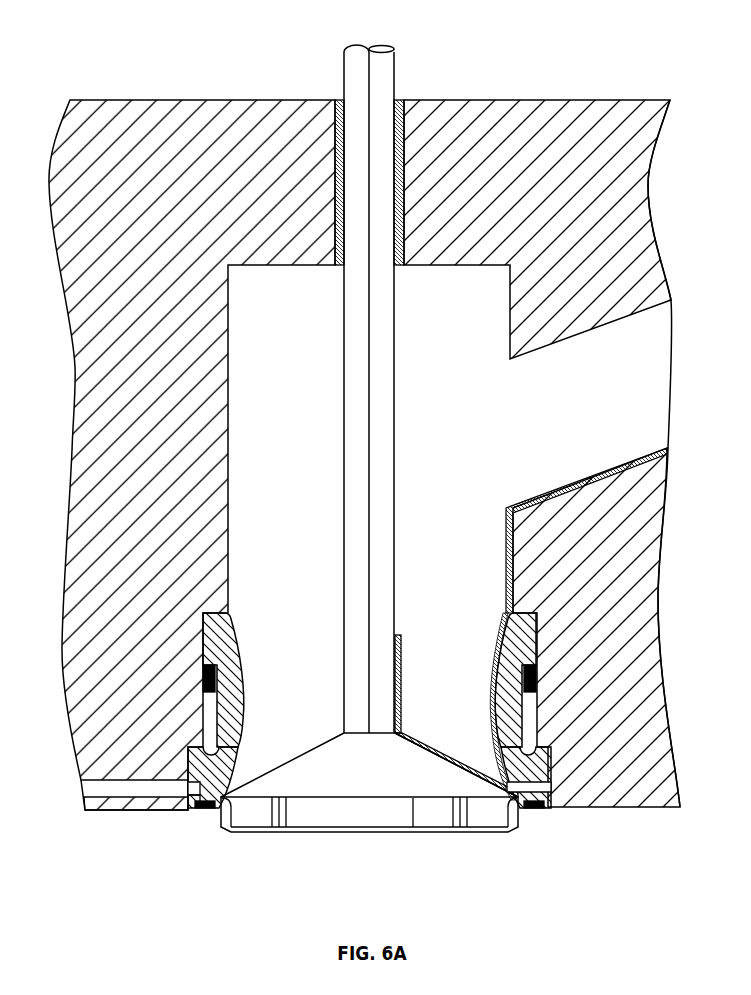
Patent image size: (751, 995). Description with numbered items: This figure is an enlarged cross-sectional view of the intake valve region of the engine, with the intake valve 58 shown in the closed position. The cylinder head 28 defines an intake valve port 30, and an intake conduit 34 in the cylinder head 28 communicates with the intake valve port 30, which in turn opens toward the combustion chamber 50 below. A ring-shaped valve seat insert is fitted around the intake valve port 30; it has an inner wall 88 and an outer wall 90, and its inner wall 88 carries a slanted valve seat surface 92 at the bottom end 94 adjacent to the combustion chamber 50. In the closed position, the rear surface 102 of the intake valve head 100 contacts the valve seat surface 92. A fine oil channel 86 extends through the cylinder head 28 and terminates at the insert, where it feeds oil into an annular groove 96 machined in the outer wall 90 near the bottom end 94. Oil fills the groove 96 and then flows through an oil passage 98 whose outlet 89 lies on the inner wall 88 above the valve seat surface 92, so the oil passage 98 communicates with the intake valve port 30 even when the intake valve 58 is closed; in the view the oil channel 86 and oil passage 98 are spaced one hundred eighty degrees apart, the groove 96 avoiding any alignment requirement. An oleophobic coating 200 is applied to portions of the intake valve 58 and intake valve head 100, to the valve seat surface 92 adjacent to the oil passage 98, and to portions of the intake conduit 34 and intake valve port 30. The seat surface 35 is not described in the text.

The cylinder head 28 is at (530, 100).
The intake valve port 30 is at (455, 471).
The intake conduit 34 is at (587, 325).
The valve seat surface 35 is at (427, 728).
The combustion chamber 50 is at (329, 866).
The intake valve 58 is at (395, 615).
The oil channel 86 is at (138, 797).
The inner wall 88 is at (240, 683).
The outlet 89 is at (508, 795).
The outer wall 90 is at (522, 716).
The valve seat surface 92 is at (223, 800).
The bottom end 94 is at (190, 808).
The annular groove 96 is at (535, 833).
The oil passage 98 is at (550, 767).
The intake valve head 100 is at (398, 835).
The rear surface 102 is at (290, 762).
The oleophobic coating 200 is at (508, 635).